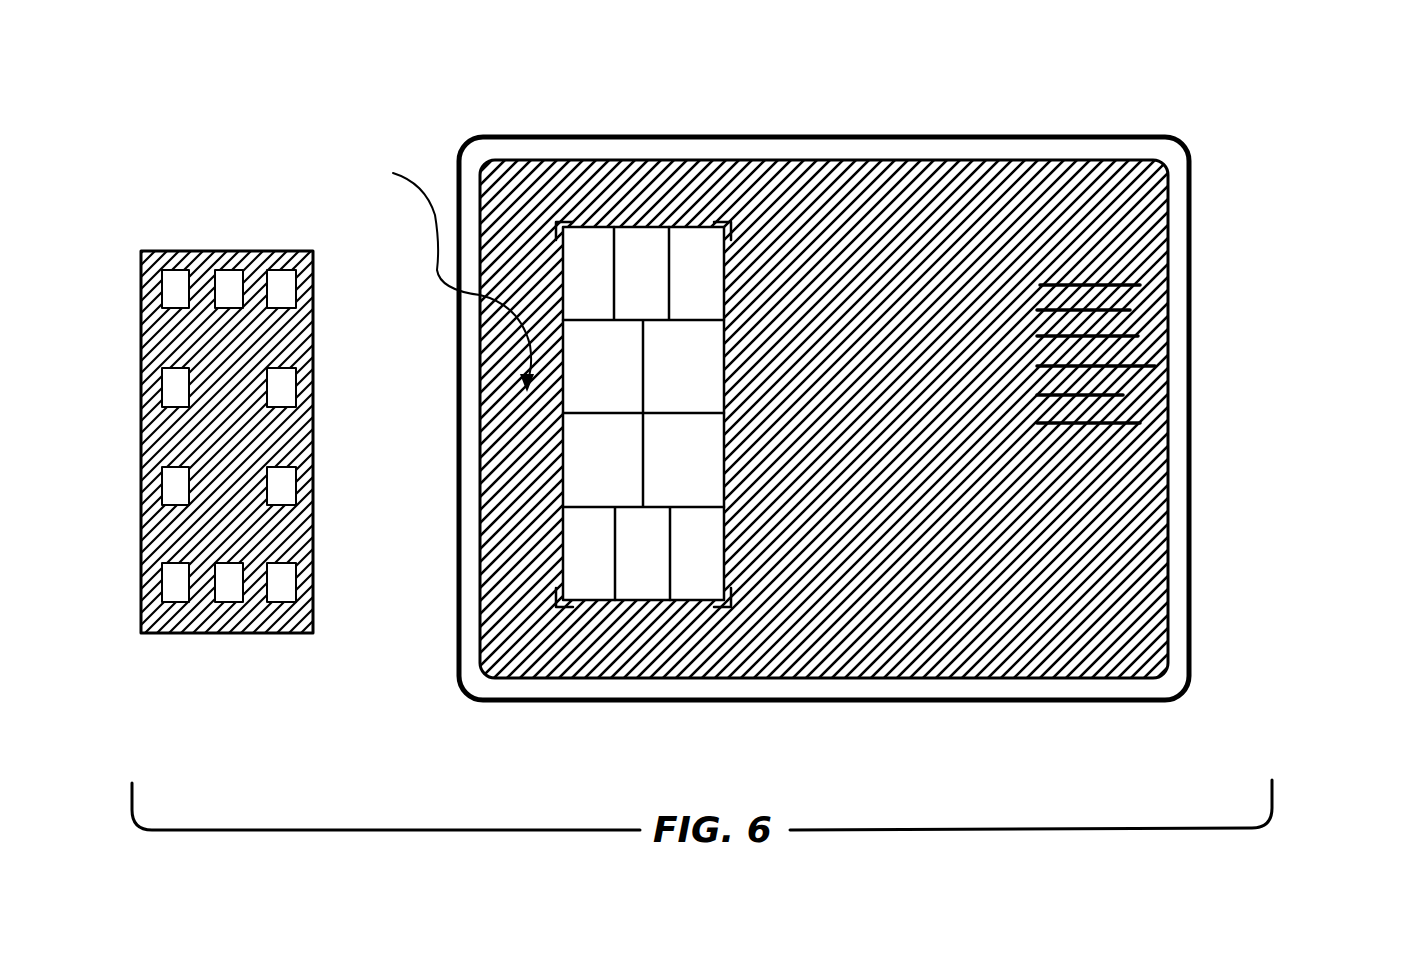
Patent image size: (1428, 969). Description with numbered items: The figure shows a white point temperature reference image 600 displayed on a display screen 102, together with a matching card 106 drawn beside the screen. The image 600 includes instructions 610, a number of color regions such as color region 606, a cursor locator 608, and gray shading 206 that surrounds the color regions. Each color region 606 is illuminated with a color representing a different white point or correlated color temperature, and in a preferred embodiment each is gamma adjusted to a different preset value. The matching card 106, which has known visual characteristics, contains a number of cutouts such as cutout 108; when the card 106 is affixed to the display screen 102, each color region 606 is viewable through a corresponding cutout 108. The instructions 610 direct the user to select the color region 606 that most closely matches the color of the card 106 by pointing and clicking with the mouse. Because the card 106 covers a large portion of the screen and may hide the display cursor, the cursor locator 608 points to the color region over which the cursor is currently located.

The display screen 102 is at (1122, 702).
The matching card 106 is at (241, 633).
The cutout 108 is at (228, 262).
The gray shading 206 is at (1155, 485).
The white point temperature reference image 600 is at (1168, 590).
The color region 606 is at (635, 257).
The cursor locator 608 is at (423, 273).
The instructions 610 is at (1145, 415).